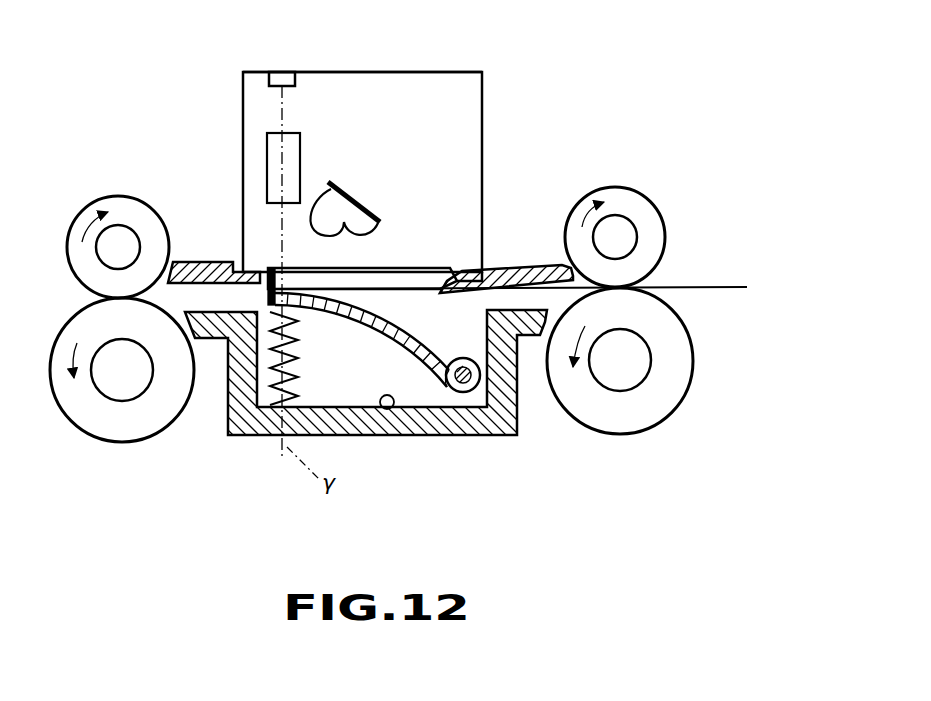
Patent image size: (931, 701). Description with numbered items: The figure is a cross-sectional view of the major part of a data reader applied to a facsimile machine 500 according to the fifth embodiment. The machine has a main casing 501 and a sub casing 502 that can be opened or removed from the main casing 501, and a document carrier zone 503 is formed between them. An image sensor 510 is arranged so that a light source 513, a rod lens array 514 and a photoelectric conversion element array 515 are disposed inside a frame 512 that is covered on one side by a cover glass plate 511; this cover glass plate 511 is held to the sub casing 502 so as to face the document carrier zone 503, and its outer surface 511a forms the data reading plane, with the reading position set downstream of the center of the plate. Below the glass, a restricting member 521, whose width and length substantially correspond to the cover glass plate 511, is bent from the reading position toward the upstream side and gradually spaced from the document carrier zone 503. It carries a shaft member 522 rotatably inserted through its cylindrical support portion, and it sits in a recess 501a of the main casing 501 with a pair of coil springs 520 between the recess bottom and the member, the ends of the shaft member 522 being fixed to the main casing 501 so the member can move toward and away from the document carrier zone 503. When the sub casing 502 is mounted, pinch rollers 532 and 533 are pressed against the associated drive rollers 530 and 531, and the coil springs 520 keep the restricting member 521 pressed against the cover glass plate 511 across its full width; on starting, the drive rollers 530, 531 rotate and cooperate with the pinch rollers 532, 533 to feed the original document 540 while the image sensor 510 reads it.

The facsimile machine 500 is at (606, 98).
The main casing 501 is at (230, 438).
The recess 501a is at (386, 437).
The sub casing 502 is at (548, 262).
The document carrier zone 503 is at (220, 302).
The image sensor 510 is at (238, 103).
The cover glass plate 511 is at (437, 280).
The outer surface 511a is at (402, 298).
The frame 512 is at (484, 72).
The light source 513 is at (395, 220).
The rod lens array 514 is at (298, 152).
The photoelectric conversion element array 515 is at (291, 73).
The coil springs 520 is at (270, 395).
The restricting member 521 is at (432, 372).
The shaft member 522 is at (471, 391).
The drive roller 530 is at (662, 402).
The drive roller 531 is at (115, 440).
The pinch roller 532 is at (657, 230).
The pinch roller 533 is at (128, 207).
The original document 540 is at (730, 283).